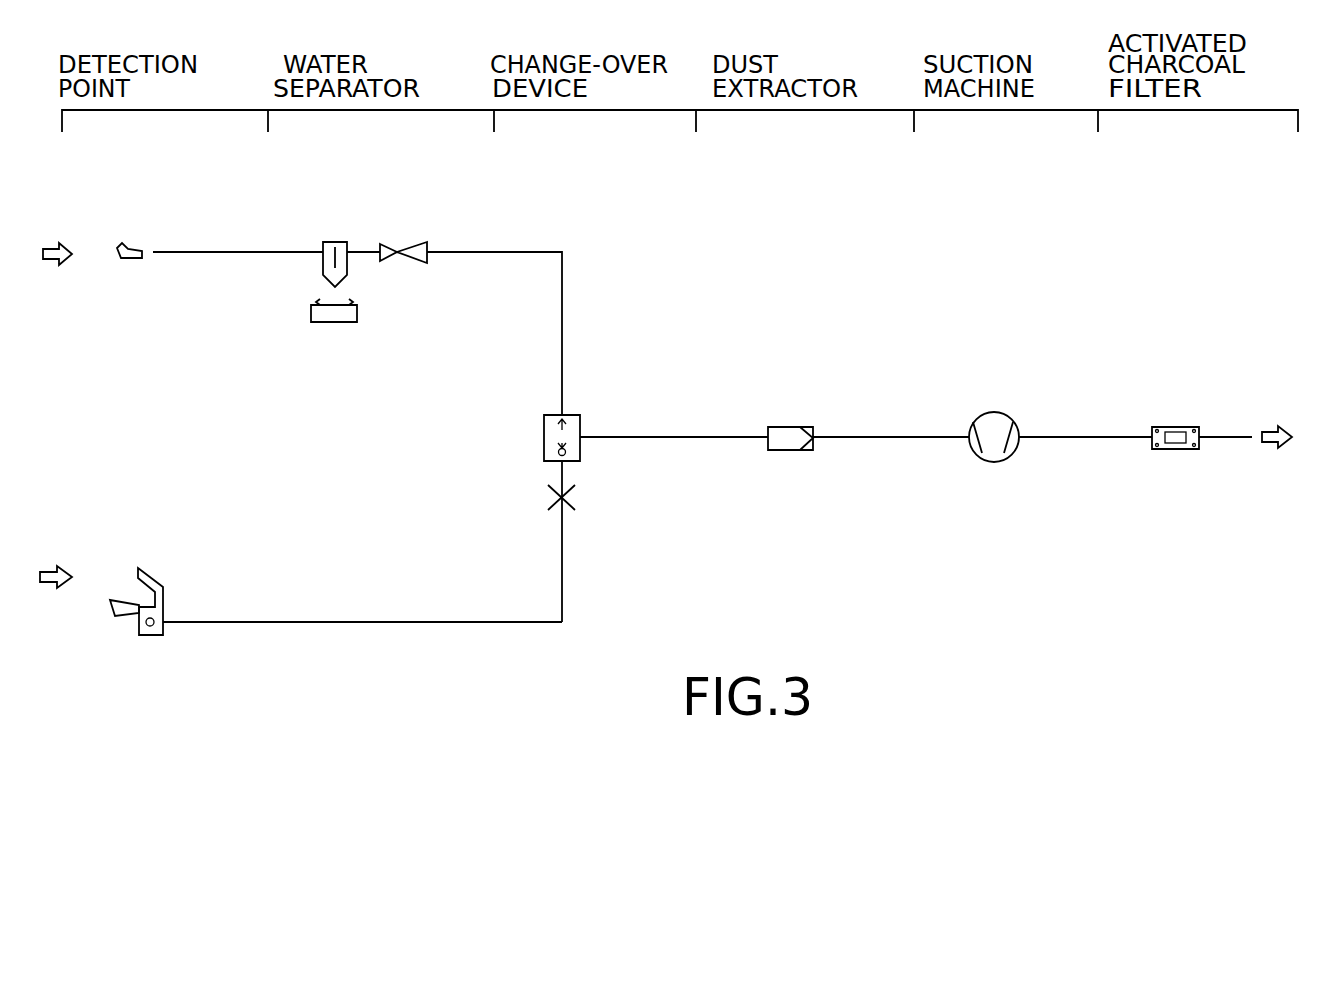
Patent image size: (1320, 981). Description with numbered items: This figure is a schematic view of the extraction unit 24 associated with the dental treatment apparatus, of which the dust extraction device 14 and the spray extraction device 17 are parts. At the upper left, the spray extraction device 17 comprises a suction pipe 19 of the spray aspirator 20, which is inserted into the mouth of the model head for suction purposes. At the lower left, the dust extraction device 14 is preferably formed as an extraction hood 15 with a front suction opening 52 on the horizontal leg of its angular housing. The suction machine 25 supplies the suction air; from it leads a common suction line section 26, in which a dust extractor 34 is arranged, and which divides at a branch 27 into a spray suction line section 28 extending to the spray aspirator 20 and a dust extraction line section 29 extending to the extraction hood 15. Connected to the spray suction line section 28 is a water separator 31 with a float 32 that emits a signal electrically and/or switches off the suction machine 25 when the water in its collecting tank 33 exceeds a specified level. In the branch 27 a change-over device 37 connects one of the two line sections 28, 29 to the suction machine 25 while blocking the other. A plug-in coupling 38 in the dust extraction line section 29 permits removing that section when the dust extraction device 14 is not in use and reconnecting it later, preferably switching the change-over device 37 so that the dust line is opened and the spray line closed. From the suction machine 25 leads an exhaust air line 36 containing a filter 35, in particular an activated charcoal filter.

The dust extraction device 14 is at (257, 624).
The extraction hood 15 is at (148, 570).
The spray extraction device 17 is at (218, 254).
The suction pipe 19 is at (154, 229).
The spray aspirator 20 is at (135, 247).
The extraction unit 24 is at (677, 358).
The suction machine 25 is at (990, 421).
The common suction line section 26 is at (888, 435).
The branch 27 is at (623, 448).
The spray suction line section 28 is at (500, 254).
The dust extraction line section 29 is at (375, 621).
The water separator 31 is at (326, 344).
The float 32 is at (405, 250).
The collecting tank 33 is at (349, 316).
The dust extractor 34 is at (784, 427).
The filter 35 is at (1172, 426).
The exhaust air line 36 is at (1092, 439).
The change-over device 37 is at (596, 457).
The plug-in coupling 38 is at (580, 498).
The front suction opening 52 is at (140, 600).